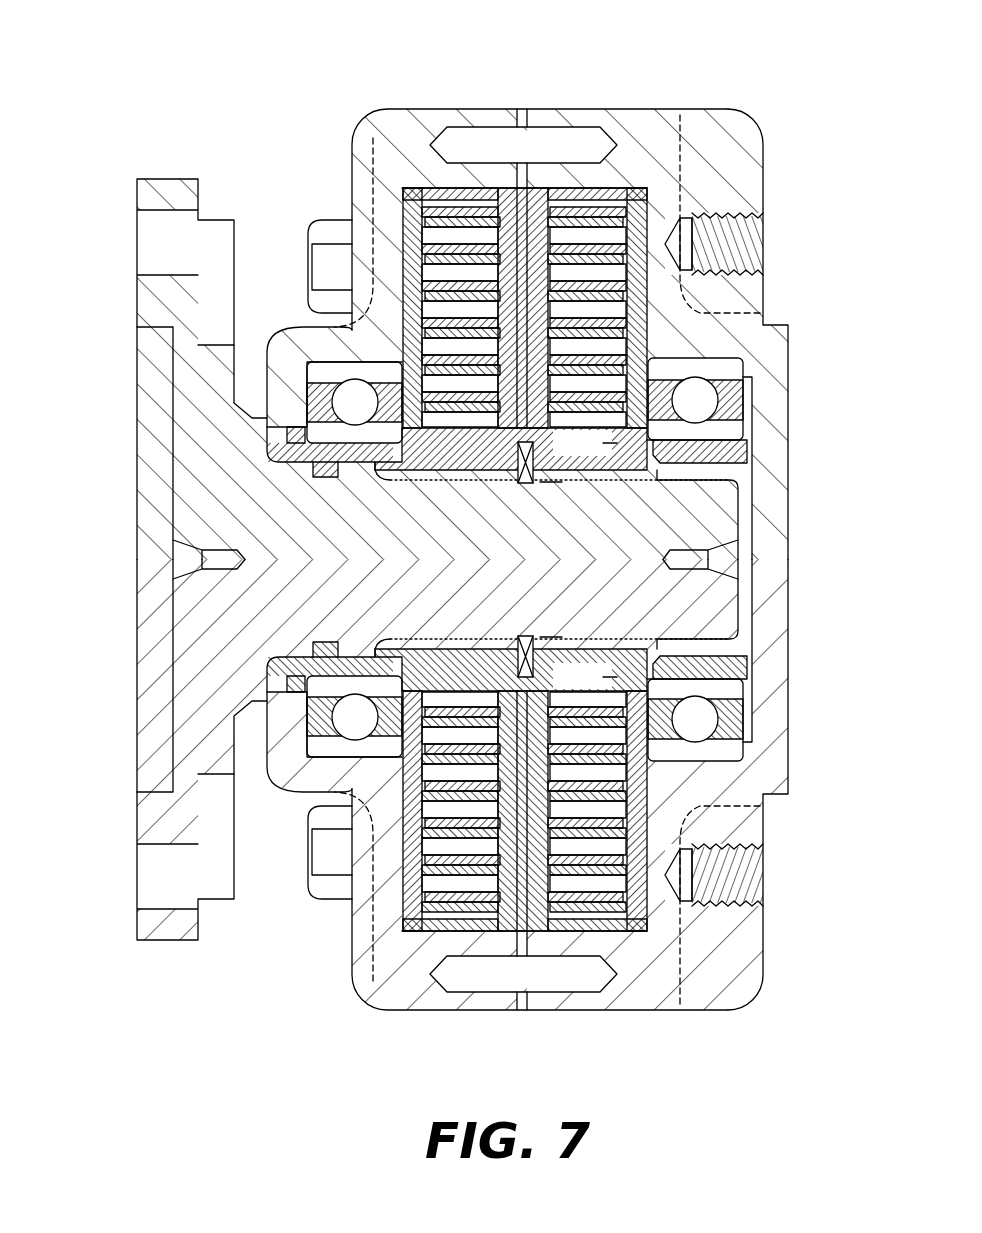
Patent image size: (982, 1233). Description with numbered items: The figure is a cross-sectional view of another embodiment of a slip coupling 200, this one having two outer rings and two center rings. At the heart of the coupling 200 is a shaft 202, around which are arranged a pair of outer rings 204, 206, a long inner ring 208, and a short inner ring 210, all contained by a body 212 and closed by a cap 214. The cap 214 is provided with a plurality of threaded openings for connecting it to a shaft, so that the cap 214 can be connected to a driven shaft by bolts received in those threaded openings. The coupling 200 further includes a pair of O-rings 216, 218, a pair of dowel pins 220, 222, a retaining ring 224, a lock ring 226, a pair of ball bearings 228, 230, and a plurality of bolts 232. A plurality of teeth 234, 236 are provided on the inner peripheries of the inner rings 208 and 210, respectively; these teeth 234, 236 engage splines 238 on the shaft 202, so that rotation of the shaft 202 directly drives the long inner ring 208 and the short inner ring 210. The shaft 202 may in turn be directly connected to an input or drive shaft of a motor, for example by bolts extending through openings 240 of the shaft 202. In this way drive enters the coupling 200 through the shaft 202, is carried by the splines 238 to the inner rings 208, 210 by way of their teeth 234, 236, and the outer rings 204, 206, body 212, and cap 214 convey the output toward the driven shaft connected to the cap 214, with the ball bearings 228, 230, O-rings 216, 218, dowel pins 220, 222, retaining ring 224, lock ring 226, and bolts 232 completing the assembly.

The slip coupling 200 is at (93, 186).
The shaft 202 is at (190, 392).
The outer ring 204 is at (418, 128).
The outer ring 206 is at (630, 130).
The long inner ring 208 is at (514, 128).
The short inner ring 210 is at (537, 128).
The body 212 is at (280, 345).
The cap 214 is at (792, 328).
The O-ring 216 is at (287, 437).
The O-ring 218 is at (328, 478).
The dowel pin 220 is at (480, 128).
The dowel pin 222 is at (540, 975).
The retaining ring 224 is at (530, 484).
The lock ring 226 is at (545, 482).
The ball bearing 228 is at (336, 432).
The ball bearing 230 is at (720, 372).
The bolt 232 is at (307, 252).
The teeth 234 is at (458, 472).
The teeth 236 is at (585, 560).
The splines 238 is at (643, 485).
The openings 240 is at (137, 230).